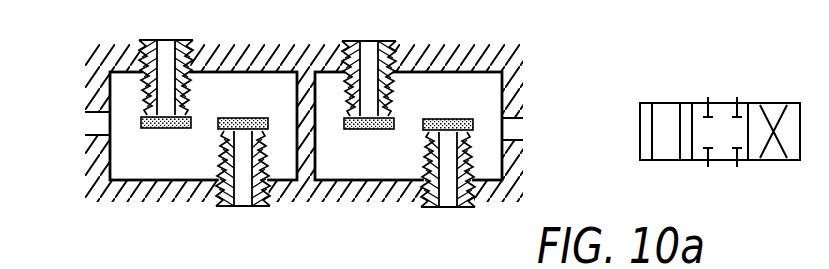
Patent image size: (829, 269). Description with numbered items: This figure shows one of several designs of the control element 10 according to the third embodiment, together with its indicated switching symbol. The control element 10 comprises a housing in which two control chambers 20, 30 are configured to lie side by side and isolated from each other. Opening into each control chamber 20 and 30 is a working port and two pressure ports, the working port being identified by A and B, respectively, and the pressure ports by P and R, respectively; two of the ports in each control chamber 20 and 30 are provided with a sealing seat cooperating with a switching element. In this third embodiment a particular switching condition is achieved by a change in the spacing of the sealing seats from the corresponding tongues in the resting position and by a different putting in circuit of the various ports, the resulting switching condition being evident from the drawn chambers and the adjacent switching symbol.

The control element 10 is at (720, 136).
The control chamber 20 is at (160, 158).
The control chamber 30 is at (387, 160).